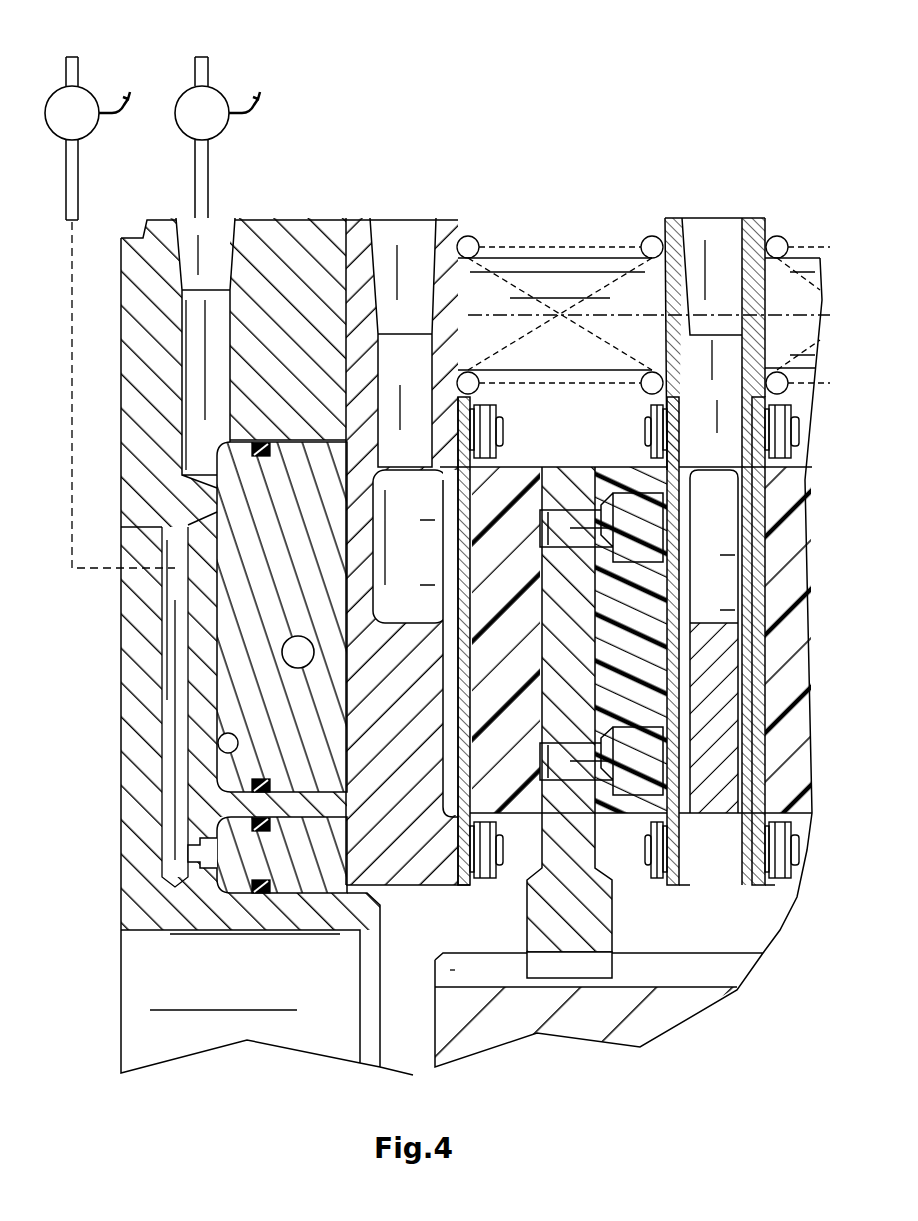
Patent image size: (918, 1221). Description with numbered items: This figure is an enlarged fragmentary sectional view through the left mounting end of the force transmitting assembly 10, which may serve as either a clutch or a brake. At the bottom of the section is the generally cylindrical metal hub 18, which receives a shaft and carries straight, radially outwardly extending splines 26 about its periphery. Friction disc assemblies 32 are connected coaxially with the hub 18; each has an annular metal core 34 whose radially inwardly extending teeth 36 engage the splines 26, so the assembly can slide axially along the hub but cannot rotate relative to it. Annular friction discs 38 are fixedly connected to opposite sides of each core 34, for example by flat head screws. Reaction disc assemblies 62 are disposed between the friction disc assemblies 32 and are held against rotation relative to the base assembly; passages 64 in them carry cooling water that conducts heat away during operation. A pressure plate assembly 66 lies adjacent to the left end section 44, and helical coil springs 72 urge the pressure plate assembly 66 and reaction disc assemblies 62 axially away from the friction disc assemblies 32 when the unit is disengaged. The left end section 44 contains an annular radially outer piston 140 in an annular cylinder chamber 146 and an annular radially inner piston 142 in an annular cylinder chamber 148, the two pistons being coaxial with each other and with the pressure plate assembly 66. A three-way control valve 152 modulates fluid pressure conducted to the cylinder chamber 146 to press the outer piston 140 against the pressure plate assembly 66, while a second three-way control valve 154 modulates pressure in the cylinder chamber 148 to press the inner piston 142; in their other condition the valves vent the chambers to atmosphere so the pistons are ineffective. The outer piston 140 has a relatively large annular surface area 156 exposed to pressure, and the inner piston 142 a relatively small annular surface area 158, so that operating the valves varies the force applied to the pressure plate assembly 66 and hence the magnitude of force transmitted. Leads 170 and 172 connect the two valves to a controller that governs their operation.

The force transmitting assembly 10 is at (770, 148).
The hub 18 is at (665, 1010).
The splines 26 is at (722, 968).
The friction disc assemblies 32 is at (567, 464).
The core 34 is at (593, 922).
The teeth 36 is at (553, 965).
The friction discs 38 is at (502, 790).
The left end section 44 is at (298, 213).
The reaction disc assemblies 62 is at (719, 213).
The passages 64 is at (737, 232).
The pressure plate assembly 66 is at (452, 212).
The helical coil springs 72 is at (655, 238).
The outer piston 140 is at (247, 652).
The inner piston 142 is at (240, 853).
The cylinder chamber 146 is at (218, 743).
The cylinder chamber 148 is at (217, 872).
The three-way control valve 152 is at (212, 95).
The three-way control valve 154 is at (85, 100).
The annular surface area 156 is at (218, 623).
The annular surface area 158 is at (213, 837).
The lead 170 is at (240, 116).
The lead 172 is at (108, 118).